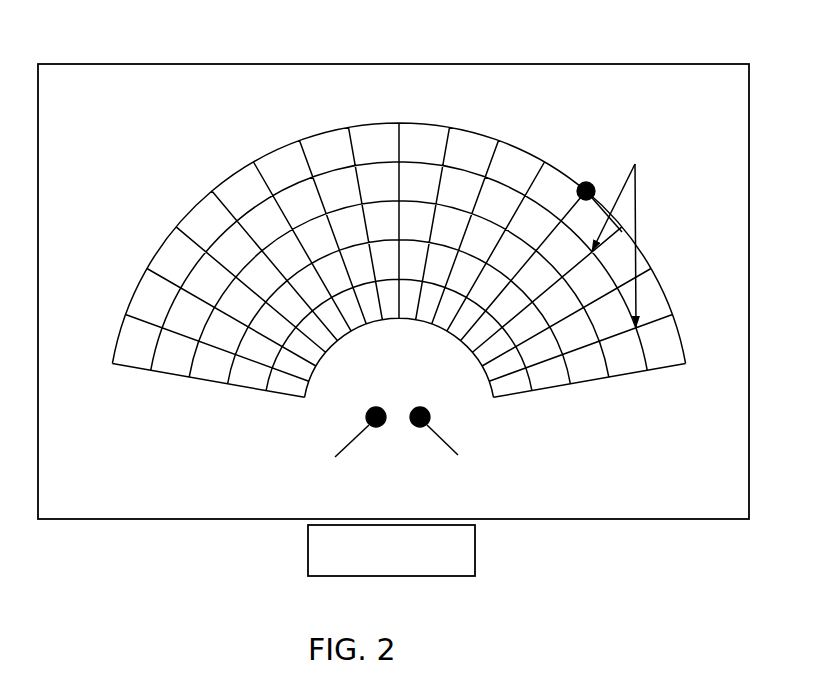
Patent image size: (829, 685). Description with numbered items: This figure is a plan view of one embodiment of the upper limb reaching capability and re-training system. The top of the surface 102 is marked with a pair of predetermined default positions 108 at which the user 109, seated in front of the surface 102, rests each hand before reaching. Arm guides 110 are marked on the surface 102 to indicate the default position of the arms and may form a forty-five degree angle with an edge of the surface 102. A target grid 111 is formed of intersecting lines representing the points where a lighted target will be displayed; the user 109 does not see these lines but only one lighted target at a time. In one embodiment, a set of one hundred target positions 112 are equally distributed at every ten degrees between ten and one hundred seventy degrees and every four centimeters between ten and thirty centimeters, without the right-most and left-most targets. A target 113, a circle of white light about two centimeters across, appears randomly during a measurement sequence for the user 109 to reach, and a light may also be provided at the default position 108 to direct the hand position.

The surface 102 is at (142, 62).
The default position 108 is at (418, 404).
The user 109 is at (322, 551).
The arm guide 110 is at (322, 455).
The target grid 111 is at (233, 166).
The target position 112 is at (640, 229).
The target 113 is at (588, 179).